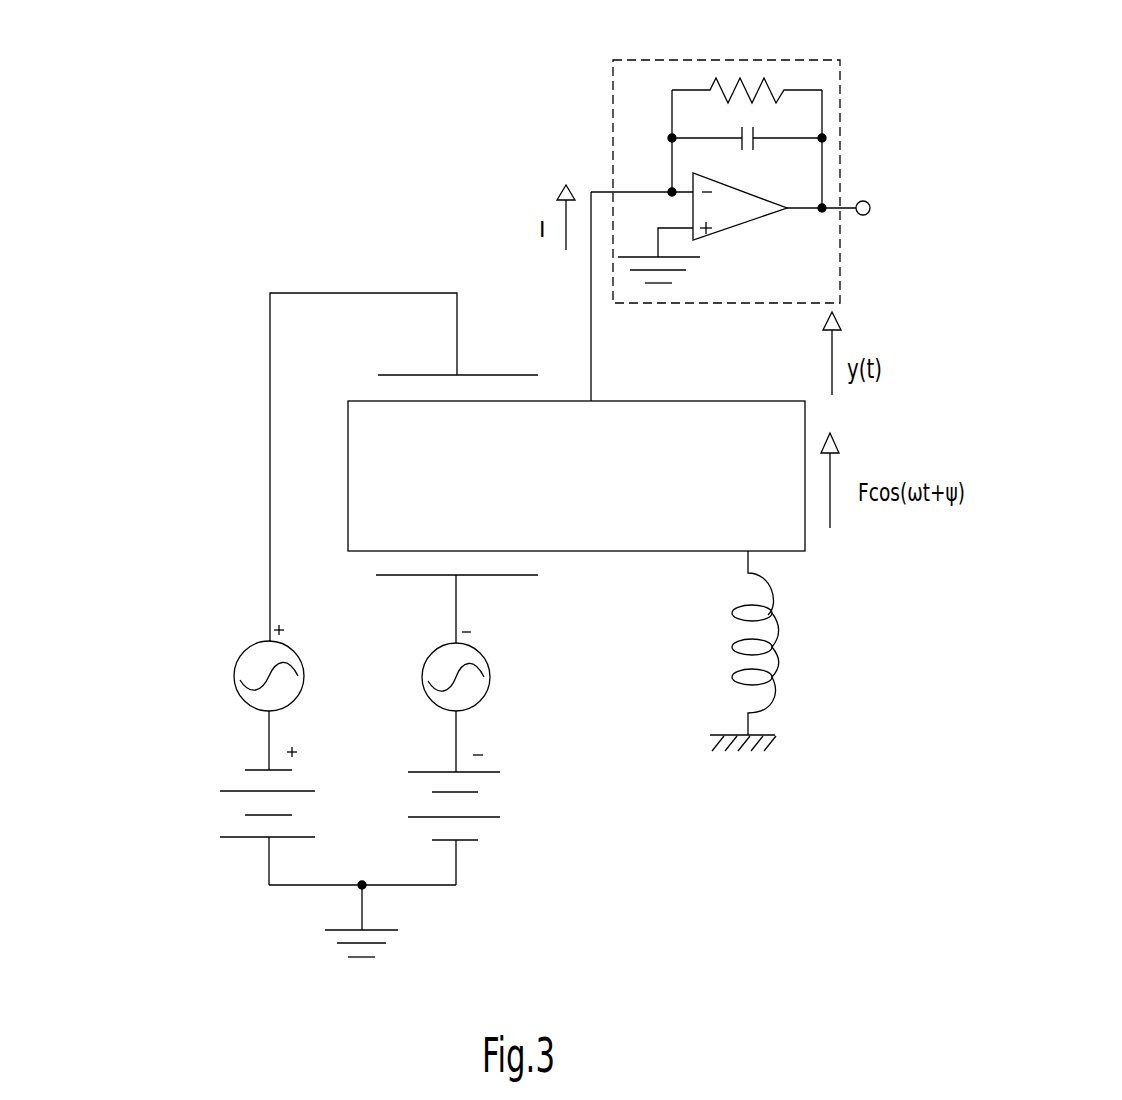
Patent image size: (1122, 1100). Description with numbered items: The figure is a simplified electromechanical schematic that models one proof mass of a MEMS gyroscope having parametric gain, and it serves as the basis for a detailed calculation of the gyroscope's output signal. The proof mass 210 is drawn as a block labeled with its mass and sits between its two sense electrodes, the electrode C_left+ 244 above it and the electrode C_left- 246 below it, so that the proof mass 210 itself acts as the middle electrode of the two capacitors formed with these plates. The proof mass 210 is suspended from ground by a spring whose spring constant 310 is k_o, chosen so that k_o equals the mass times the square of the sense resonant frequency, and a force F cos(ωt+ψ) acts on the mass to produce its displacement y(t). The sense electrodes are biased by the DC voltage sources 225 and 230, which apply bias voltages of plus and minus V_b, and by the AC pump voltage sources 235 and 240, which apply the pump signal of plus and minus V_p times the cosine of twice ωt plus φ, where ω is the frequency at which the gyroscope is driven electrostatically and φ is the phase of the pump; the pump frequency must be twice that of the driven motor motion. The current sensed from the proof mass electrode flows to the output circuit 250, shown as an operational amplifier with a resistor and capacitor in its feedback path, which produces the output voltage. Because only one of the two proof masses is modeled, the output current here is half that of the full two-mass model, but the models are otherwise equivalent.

The proof mass 210 is at (768, 402).
The DC voltage source 225 is at (238, 757).
The DC voltage source 230 is at (428, 758).
The AC pump voltage source 235 is at (296, 653).
The AC pump voltage source 240 is at (480, 656).
The electrode C_left+ 244 is at (514, 375).
The electrode C_left- 246 is at (500, 577).
The output circuit 250 is at (730, 60).
The spring constant 310 is at (732, 612).